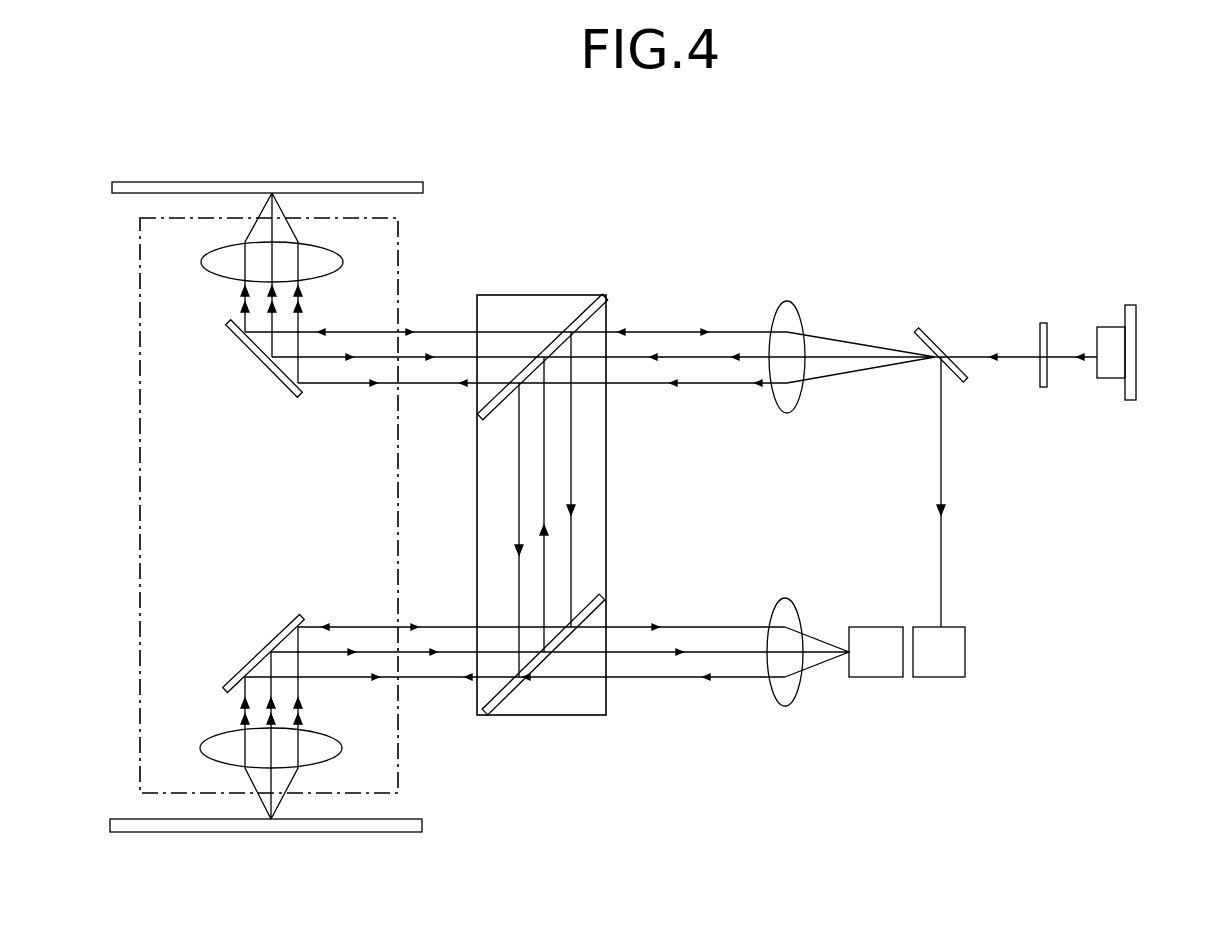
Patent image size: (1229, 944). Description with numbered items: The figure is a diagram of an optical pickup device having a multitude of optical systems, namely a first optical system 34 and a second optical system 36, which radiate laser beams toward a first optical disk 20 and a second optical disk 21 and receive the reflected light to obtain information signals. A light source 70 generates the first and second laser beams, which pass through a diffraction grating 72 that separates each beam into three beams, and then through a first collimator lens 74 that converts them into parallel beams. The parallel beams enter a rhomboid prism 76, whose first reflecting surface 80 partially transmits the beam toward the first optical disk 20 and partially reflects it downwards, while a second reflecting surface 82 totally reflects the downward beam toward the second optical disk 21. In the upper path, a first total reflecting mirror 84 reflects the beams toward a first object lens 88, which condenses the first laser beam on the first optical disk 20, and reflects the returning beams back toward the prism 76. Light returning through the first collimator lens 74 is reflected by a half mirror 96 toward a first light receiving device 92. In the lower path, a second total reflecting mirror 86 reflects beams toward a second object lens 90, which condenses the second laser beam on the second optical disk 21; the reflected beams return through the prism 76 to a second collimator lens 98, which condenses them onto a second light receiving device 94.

The first optical disk 20 is at (380, 183).
The second optical disk 21 is at (380, 833).
The first optical system 34 is at (690, 298).
The second optical system 36 is at (621, 740).
The light source 70 is at (1128, 357).
The diffraction grating 72 is at (1050, 336).
The first collimator lens 74 is at (793, 312).
The rhomboid prism 76 is at (500, 308).
The first reflecting surface 80 is at (590, 300).
The second reflecting surface 82 is at (592, 613).
The first total reflecting mirror 84 is at (278, 380).
The second total reflecting mirror 86 is at (275, 636).
The first object lens 88 is at (210, 262).
The second object lens 90 is at (210, 745).
The first light receiving device 92 is at (944, 665).
The second light receiving device 94 is at (884, 662).
The half mirror 96 is at (935, 340).
The second collimator lens 98 is at (793, 608).